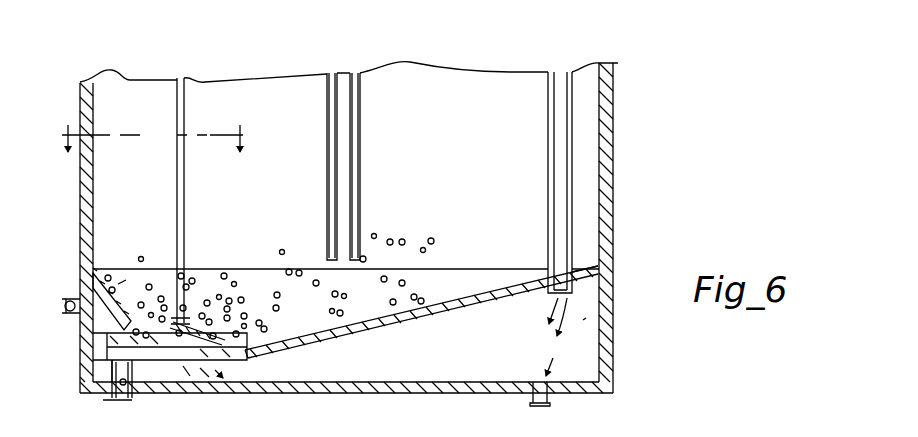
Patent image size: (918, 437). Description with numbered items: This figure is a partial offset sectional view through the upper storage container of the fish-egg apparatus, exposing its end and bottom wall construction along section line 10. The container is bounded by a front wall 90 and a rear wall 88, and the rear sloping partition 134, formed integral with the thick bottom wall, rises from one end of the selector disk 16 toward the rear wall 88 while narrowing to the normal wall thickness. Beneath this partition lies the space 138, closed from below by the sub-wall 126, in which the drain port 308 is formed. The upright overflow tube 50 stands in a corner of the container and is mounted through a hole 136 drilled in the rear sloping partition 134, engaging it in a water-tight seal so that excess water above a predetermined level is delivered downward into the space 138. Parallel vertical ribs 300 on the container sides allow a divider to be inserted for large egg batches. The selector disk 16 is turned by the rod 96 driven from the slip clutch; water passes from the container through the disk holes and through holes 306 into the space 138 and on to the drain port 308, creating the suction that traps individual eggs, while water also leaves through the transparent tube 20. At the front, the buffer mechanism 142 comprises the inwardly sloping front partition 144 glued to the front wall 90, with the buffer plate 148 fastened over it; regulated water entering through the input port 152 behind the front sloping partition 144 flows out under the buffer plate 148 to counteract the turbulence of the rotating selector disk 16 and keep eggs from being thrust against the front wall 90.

The section line 10 is at (157, 126).
The selector disk 16 is at (238, 368).
The transparent tube 20 is at (136, 386).
The overflow tube 50 is at (548, 132).
The rear wall 88 is at (614, 163).
The front wall 90 is at (88, 112).
The rod 96 is at (180, 105).
The sub-wall 126 is at (590, 398).
The rear sloping partition 134 is at (470, 296).
The hole 136 is at (587, 262).
The space 138 is at (583, 320).
The buffer mechanism 142 is at (118, 280).
The front sloping partition 144 is at (93, 268).
The buffer plate 148 is at (122, 282).
The input port 152 is at (80, 305).
The parallel vertical ribs 300 is at (360, 107).
The holes 306 is at (185, 397).
The drain port 308 is at (542, 382).